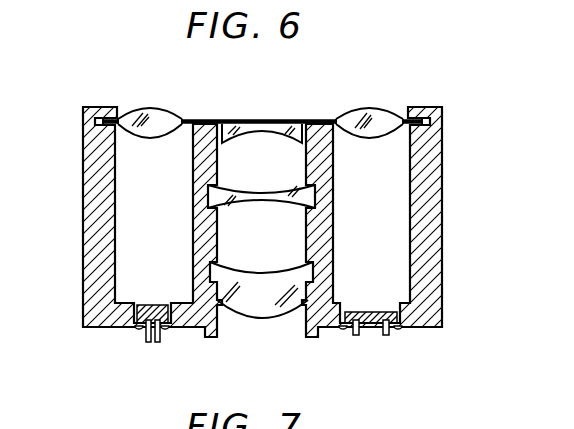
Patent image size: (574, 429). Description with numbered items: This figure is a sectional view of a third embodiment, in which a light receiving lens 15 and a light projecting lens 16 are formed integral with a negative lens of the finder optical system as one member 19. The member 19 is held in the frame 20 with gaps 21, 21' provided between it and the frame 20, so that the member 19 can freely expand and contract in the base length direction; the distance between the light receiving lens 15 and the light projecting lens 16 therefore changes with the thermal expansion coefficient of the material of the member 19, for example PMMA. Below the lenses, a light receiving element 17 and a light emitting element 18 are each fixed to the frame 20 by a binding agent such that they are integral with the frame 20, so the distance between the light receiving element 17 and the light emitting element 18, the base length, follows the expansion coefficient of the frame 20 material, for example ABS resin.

The light receiving lens 15 is at (367, 117).
The light projecting lens 16 is at (153, 120).
The light receiving element 17 is at (370, 323).
The light emitting element 18 is at (166, 313).
The member 19 is at (268, 117).
The frame 20 is at (441, 247).
The gap 21 is at (423, 96).
The gap 21' is at (98, 97).